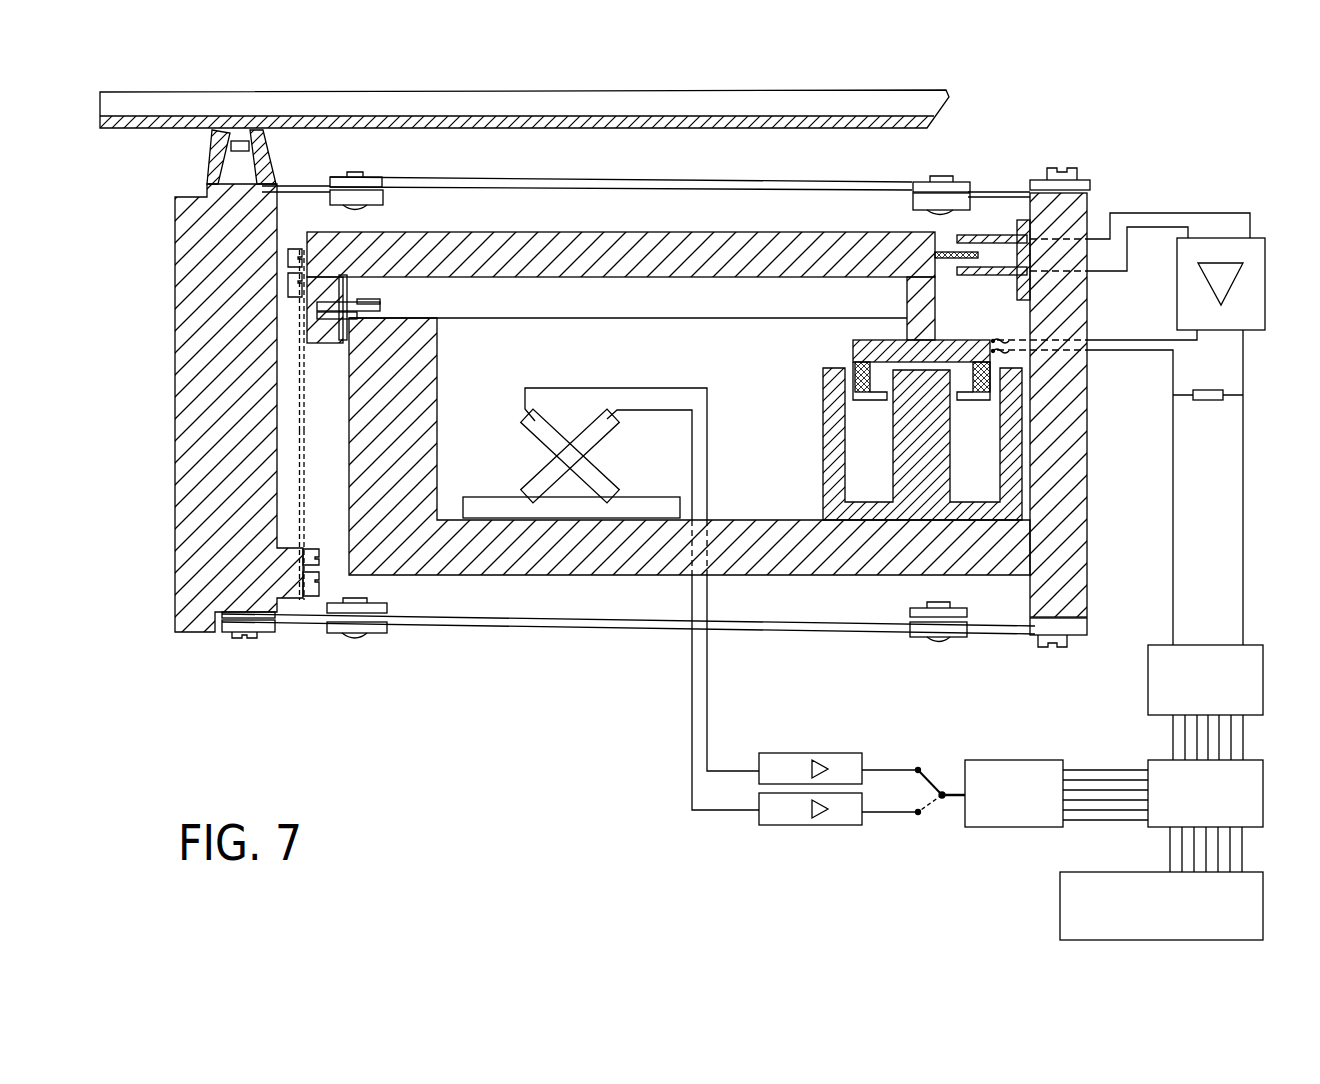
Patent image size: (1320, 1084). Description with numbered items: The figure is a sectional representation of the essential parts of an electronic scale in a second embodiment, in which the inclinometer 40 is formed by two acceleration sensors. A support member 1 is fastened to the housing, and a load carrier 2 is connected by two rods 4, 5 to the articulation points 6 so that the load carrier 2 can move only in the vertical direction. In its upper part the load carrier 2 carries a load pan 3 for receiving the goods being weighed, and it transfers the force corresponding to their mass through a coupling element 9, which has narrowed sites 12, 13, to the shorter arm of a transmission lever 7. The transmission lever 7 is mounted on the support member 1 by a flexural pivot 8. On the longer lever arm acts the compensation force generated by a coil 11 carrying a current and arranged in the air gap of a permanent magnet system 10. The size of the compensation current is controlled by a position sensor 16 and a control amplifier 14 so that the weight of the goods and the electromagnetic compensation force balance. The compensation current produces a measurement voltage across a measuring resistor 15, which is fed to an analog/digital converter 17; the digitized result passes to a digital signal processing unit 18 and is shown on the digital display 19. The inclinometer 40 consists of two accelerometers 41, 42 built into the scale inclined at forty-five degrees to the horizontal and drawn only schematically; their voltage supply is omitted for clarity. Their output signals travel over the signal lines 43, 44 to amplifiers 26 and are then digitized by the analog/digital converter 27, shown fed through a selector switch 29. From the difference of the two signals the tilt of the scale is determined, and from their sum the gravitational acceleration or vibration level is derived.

The support member 1 is at (425, 378).
The load carrier 2 is at (189, 432).
The load pan 3 is at (944, 111).
The rod 4 is at (692, 182).
The rod 5 is at (516, 630).
The articulation points 6 is at (303, 182).
The transmission lever 7 is at (510, 240).
The flexural pivot 8 is at (329, 327).
The coupling element 9 is at (305, 428).
The permanent magnet system 10 is at (827, 485).
The coil 11 is at (853, 365).
The narrowed site 12 is at (296, 313).
The narrowed site 13 is at (305, 535).
The control amplifier 14 is at (1230, 247).
The measuring resistor 15 is at (1197, 408).
The position sensor 16 is at (980, 235).
The analog/digital converter 17 is at (1160, 650).
The digital signal processing unit 18 is at (1162, 765).
The digital display 19 is at (1068, 905).
The amplifiers 26 is at (792, 770).
The analog/digital converter 27 is at (993, 765).
The switch 29 is at (928, 773).
The inclinometer 40 is at (567, 463).
The accelerometer 41 is at (543, 484).
The accelerometer 42 is at (591, 478).
The signal line 43 is at (688, 708).
The signal line 44 is at (657, 387).